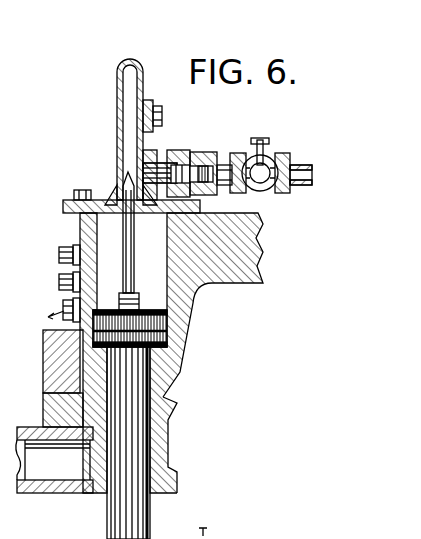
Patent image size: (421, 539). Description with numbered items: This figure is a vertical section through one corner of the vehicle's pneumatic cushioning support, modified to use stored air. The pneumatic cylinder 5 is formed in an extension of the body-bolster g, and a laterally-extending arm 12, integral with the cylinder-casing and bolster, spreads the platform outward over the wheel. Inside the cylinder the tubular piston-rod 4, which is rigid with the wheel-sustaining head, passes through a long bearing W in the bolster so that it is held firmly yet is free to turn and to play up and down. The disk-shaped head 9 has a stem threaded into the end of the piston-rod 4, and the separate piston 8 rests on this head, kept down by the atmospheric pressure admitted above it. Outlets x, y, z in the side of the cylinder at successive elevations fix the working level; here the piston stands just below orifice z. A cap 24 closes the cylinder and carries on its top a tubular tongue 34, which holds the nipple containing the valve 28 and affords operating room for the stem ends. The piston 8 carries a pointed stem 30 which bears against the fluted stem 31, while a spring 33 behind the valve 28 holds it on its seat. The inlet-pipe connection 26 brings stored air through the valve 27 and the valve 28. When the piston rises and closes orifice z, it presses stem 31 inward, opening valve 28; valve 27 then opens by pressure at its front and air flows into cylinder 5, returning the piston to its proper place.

The tubular tongue 34 is at (117, 113).
The cap 24 is at (110, 199).
The fluted stem 31 is at (160, 163).
The valve 28 is at (188, 151).
The spring 33 is at (209, 152).
The valve 27 is at (261, 152).
The inlet-pipe connection 26 is at (330, 168).
The pneumatic cylinder 5 is at (78, 233).
The outlet x is at (59, 254).
The outlet y is at (59, 281).
The outlet z is at (63, 304).
The stem 30 is at (145, 241).
The arm 12 is at (222, 353).
The piston 8 is at (167, 318).
The head 9 is at (167, 345).
The bearing W is at (153, 432).
The body-bolster g is at (87, 460).
The piston-rod 4 is at (107, 513).